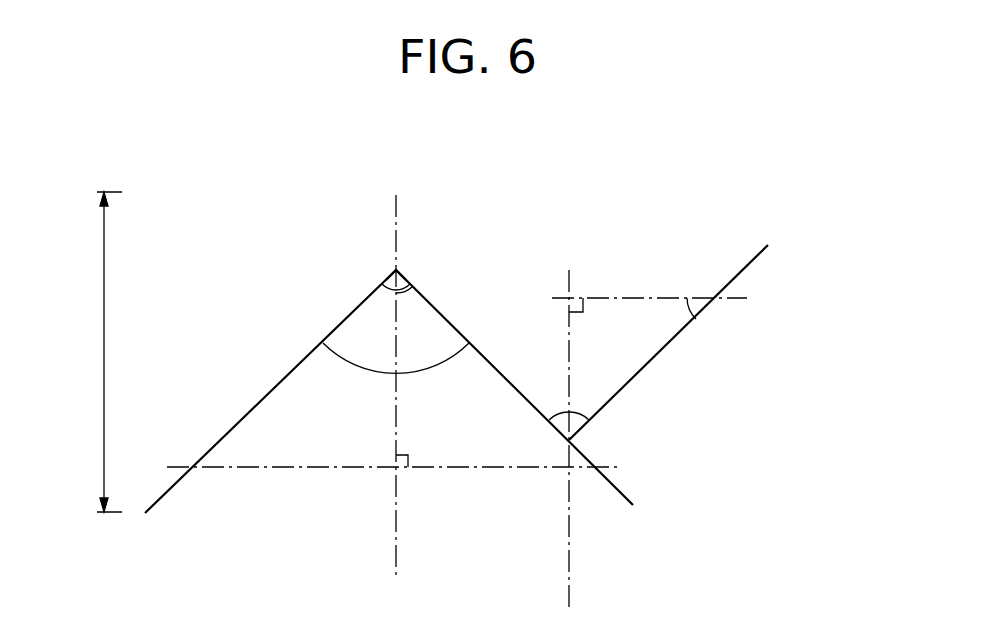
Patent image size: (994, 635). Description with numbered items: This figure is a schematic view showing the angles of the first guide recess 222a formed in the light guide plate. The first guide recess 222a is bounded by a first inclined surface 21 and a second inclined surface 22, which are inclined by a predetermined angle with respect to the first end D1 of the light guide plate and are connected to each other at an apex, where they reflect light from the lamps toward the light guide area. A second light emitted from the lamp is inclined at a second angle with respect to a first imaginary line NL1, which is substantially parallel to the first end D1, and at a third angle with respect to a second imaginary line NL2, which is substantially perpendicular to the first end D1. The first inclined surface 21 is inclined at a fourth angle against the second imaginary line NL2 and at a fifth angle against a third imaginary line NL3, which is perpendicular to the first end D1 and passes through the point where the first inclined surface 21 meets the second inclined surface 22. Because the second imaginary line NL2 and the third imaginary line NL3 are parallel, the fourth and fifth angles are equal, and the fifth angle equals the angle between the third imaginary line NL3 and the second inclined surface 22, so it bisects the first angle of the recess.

The second inclined surface 22 is at (334, 330).
The first inclined surface 21 is at (455, 329).
The first guide recess 222a is at (403, 276).
The first imaginary line NL1 is at (740, 300).
The second imaginary line NL2 is at (568, 583).
The third imaginary line NL3 is at (395, 564).
The first end D1 is at (94, 352).